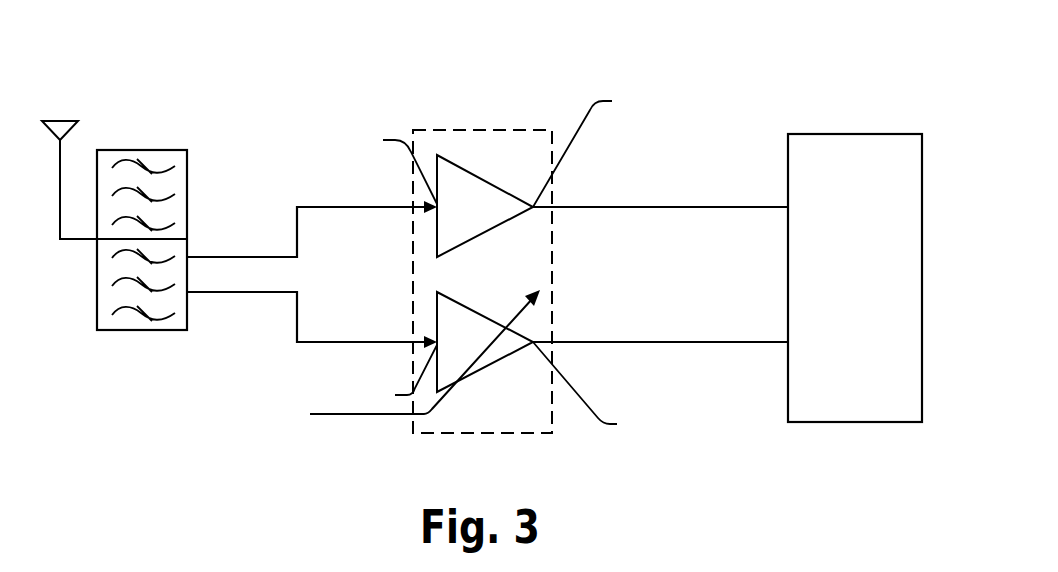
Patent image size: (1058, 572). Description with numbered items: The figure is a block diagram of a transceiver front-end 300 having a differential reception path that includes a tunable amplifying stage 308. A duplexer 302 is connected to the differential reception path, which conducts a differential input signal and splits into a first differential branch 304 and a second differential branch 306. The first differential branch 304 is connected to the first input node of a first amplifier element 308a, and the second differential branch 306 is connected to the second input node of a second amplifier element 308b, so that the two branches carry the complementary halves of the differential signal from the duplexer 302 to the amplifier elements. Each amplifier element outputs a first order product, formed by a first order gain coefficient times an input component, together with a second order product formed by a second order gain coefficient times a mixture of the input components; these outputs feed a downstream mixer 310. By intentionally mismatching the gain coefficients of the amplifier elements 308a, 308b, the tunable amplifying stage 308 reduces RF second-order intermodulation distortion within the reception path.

The transceiver front-end 300 is at (104, 36).
The duplexer 302 is at (141, 150).
The first differential branch 304 is at (317, 207).
The second differential branch 306 is at (317, 343).
The tunable amplifying stage 308 is at (504, 130).
The first amplifier element 308a is at (467, 176).
The second amplifier element 308b is at (467, 374).
The mixer 310 is at (876, 302).